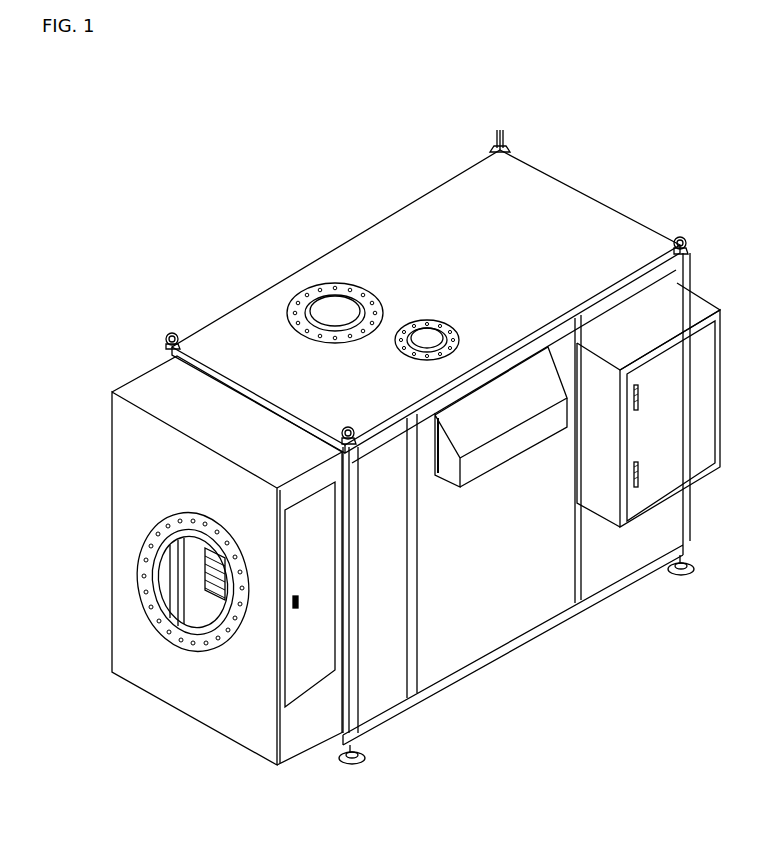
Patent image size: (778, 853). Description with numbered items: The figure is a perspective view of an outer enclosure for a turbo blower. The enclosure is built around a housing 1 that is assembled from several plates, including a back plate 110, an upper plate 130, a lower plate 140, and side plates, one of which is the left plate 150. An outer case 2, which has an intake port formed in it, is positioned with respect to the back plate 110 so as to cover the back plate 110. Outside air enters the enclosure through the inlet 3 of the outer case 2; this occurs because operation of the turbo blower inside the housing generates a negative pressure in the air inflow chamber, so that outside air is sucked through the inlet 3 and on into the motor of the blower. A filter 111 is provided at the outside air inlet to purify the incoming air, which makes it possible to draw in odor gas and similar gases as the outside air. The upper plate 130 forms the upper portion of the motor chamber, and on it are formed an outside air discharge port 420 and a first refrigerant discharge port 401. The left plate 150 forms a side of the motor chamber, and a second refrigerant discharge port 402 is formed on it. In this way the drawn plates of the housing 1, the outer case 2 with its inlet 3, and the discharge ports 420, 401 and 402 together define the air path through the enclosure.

The housing 1 is at (566, 150).
The outer case 2 is at (160, 385).
The inlet 3 is at (140, 565).
The back plate 110 is at (205, 622).
The filter 111 is at (155, 607).
The upper plate 130 is at (585, 221).
The lower plate 140 is at (565, 622).
The left plate 150 is at (502, 627).
The first refrigerant discharge port 401 is at (428, 332).
The second refrigerant discharge port 402 is at (507, 445).
The outside air discharge port 420 is at (337, 300).